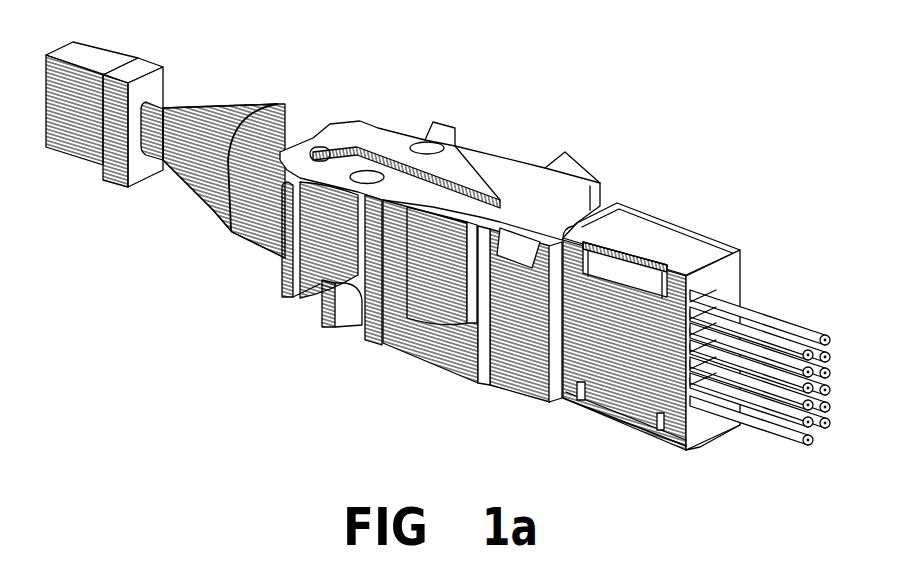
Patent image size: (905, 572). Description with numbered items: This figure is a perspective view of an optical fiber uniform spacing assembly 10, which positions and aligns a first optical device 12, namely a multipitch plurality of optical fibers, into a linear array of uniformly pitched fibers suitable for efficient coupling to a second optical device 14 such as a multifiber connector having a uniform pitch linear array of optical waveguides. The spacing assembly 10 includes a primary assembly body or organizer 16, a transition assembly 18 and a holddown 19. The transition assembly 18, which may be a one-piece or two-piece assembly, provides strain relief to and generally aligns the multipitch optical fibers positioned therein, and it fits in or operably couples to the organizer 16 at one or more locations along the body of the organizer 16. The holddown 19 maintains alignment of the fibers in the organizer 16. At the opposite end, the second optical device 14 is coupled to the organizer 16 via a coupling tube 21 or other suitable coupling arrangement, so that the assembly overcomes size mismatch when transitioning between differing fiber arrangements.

The optical fiber uniform spacing assembly 10 is at (438, 247).
The first optical device 12 is at (762, 336).
The second optical device 14 is at (112, 60).
The organizer 16 is at (432, 360).
The transition assembly 18 is at (617, 418).
The holddown 19 is at (360, 128).
The coupling tube 21 is at (213, 208).